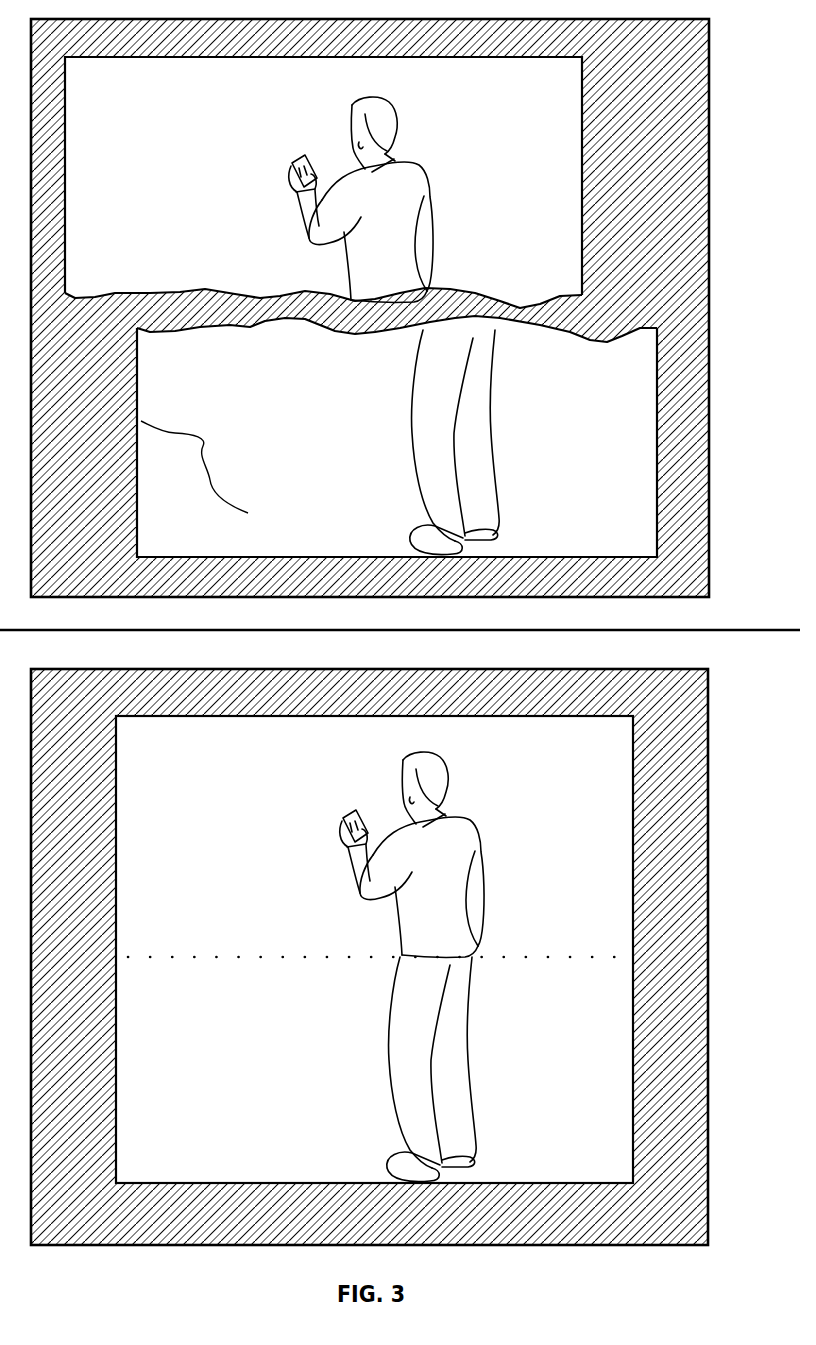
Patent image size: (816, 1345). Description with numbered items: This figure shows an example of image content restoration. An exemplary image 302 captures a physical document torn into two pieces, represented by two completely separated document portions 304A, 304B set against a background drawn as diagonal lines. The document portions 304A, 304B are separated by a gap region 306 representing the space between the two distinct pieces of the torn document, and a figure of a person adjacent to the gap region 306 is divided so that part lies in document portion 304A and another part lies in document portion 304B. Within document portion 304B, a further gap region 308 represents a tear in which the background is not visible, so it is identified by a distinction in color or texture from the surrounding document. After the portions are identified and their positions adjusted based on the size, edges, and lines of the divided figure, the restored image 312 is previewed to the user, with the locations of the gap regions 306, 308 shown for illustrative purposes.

The image 302 is at (709, 116).
The document portion 304A is at (547, 110).
The document portion 304B is at (625, 398).
The gap region 306 is at (232, 290).
The gap region 308 is at (162, 412).
The restored image 312 is at (708, 760).